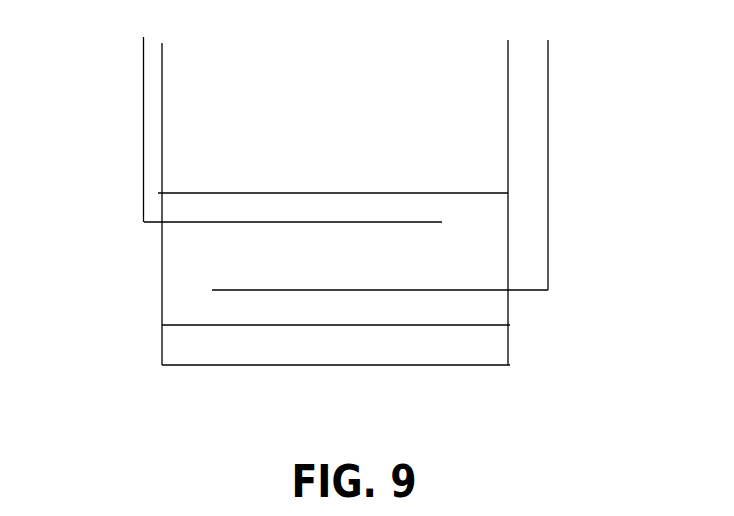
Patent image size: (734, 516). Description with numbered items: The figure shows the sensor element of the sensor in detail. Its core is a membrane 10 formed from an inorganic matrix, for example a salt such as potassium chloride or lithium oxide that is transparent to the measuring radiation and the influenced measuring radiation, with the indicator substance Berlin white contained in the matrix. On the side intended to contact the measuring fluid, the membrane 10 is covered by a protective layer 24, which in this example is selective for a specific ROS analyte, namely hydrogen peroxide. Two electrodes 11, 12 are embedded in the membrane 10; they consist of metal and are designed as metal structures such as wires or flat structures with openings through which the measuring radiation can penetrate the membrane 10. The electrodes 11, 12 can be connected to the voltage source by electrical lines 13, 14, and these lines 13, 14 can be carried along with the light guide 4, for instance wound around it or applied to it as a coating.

The light guide 4 is at (480, 108).
The membrane 10 is at (172, 295).
The electrode 11 is at (452, 295).
The electrode 12 is at (210, 227).
The electrical line 13 is at (143, 117).
The electrical line 14 is at (548, 153).
The protective layer 24 is at (457, 352).